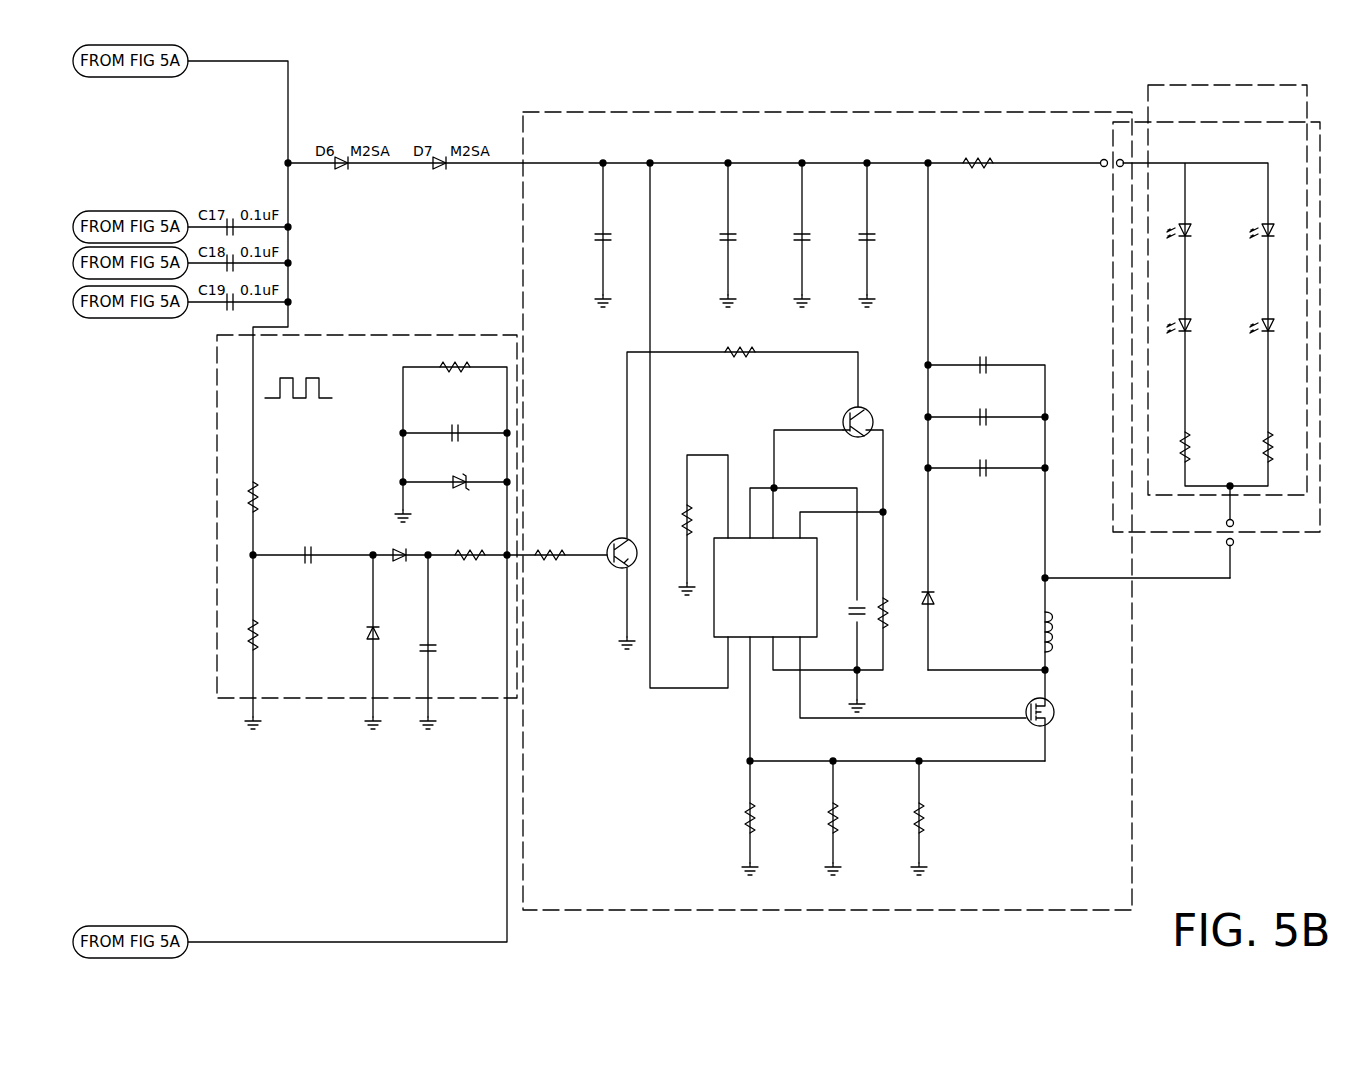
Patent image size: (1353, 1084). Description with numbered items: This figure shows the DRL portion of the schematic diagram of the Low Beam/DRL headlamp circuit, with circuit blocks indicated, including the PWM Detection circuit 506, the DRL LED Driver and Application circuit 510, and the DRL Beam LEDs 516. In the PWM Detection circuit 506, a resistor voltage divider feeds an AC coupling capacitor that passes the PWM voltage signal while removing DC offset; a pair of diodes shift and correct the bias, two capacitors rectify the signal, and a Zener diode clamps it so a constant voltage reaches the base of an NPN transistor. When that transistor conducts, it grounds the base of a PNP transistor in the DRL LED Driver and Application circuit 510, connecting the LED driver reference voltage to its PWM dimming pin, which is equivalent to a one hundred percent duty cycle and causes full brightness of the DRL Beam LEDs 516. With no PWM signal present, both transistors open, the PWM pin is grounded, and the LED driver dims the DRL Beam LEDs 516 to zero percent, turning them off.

The PWM Detection circuit 506 is at (394, 335).
The DRL LED Driver and Application circuit 510 is at (1000, 112).
The DRL Beam LEDs 516 is at (1148, 95).